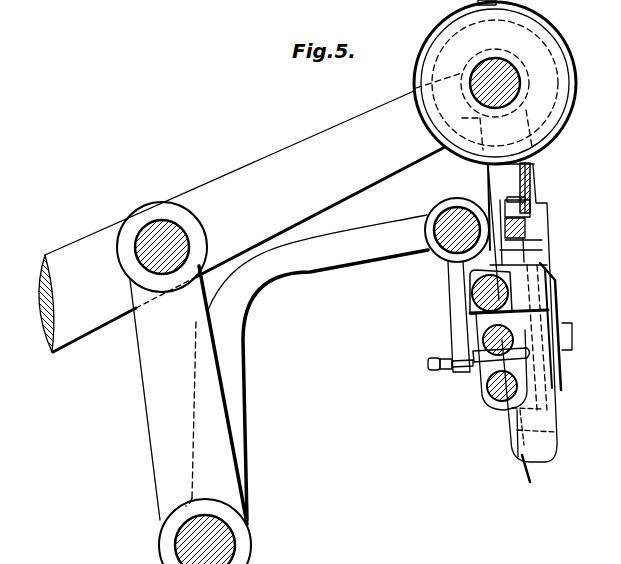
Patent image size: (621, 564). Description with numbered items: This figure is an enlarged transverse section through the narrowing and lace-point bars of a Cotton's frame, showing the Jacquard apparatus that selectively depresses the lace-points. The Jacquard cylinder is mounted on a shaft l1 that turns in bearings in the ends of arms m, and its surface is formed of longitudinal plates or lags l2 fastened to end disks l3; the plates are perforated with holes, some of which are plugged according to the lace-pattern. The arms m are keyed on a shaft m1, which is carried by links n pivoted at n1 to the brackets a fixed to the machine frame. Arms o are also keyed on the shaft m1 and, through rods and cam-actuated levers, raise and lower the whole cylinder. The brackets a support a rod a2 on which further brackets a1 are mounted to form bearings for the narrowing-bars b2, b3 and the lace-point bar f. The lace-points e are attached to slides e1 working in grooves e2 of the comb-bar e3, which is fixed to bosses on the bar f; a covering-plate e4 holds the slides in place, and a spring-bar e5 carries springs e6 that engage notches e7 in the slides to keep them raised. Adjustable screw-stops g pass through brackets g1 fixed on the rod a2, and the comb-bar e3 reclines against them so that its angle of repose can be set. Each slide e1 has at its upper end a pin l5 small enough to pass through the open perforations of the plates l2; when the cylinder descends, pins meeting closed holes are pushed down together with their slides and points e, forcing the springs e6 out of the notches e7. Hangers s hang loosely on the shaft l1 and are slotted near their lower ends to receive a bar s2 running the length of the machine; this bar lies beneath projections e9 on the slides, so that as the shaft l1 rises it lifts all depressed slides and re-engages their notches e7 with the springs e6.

The shaft l1 is at (495, 83).
The longitudinal plates or lags l2 is at (545, 24).
The end disks l3 is at (487, 85).
The pins or reduced portions l5 is at (539, 188).
The arms m is at (245, 221).
The shaft m1 is at (162, 247).
The arms o is at (69, 303).
The links n is at (188, 395).
The pivot n1 is at (236, 521).
The brackets a is at (317, 367).
The brackets a1 is at (492, 362).
The rod a2 is at (457, 230).
The hangers s is at (497, 215).
The bar s2 is at (537, 200).
The lace-points e is at (522, 326).
The slides e1 is at (536, 232).
The grooves e2 is at (509, 305).
The comb-bar e3 is at (534, 431).
The covering-plate e4 is at (556, 337).
The spring-bar e5 is at (574, 328).
The springs e6 is at (558, 326).
The notches e7 is at (547, 251).
The projections e9 is at (517, 207).
The lace-point bar f is at (491, 292).
The adjustable screw-stops g is at (467, 362).
The brackets g1 is at (451, 317).
The narrowing-bar b2 is at (498, 340).
The narrowing-bar b3 is at (502, 386).